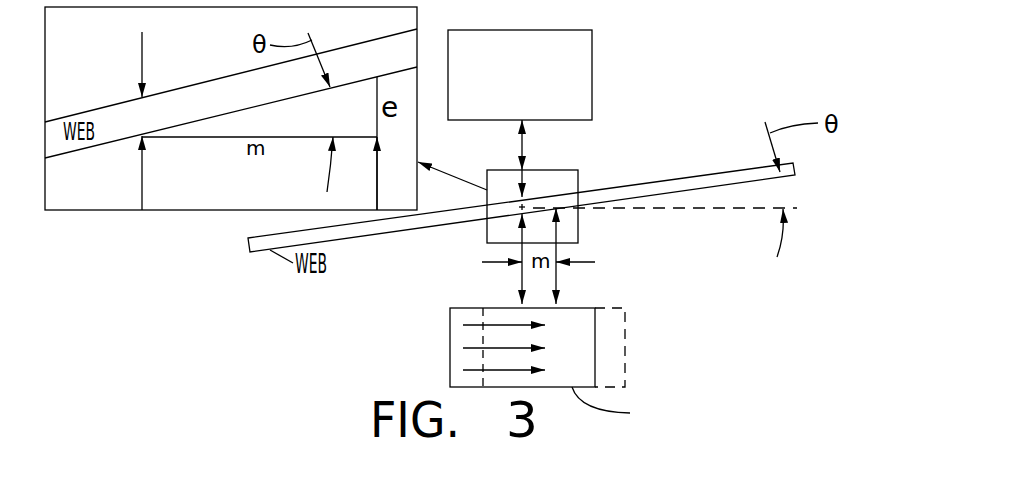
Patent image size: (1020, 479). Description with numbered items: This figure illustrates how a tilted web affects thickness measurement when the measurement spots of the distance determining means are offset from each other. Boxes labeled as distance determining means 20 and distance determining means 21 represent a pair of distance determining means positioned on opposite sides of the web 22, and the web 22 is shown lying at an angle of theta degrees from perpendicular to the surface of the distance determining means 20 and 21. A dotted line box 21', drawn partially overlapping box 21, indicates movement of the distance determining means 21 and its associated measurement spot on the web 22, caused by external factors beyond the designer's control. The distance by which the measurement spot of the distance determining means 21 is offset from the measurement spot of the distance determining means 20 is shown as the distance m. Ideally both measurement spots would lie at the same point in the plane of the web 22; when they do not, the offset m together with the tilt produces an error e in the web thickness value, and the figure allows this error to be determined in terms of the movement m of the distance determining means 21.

The distance determining means 20 is at (582, 62).
The distance determining means 21 is at (553, 380).
The dotted line box 21' is at (654, 347).
The web 22 is at (655, 187).